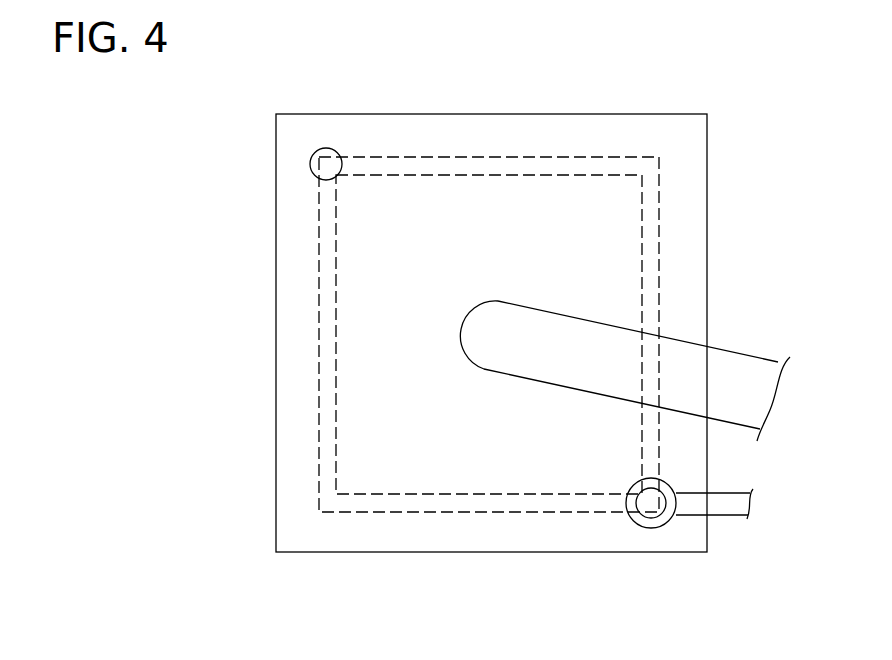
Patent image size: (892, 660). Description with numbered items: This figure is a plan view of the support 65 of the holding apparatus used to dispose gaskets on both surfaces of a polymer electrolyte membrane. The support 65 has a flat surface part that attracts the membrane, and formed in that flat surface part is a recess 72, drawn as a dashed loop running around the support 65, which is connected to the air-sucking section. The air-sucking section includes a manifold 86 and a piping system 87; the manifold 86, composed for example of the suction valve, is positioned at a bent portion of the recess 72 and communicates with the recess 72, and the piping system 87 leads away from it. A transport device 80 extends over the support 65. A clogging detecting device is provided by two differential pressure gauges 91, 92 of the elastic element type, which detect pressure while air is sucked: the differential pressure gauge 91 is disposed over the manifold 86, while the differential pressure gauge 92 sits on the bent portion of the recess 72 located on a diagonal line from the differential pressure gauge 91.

The support 65 is at (412, 552).
The recess 72 is at (318, 318).
The transport device 80 is at (765, 356).
The manifold 86 is at (666, 527).
The piping system 87 is at (727, 517).
The differential pressure gauge 91 is at (645, 521).
The differential pressure gauge 92 is at (310, 164).